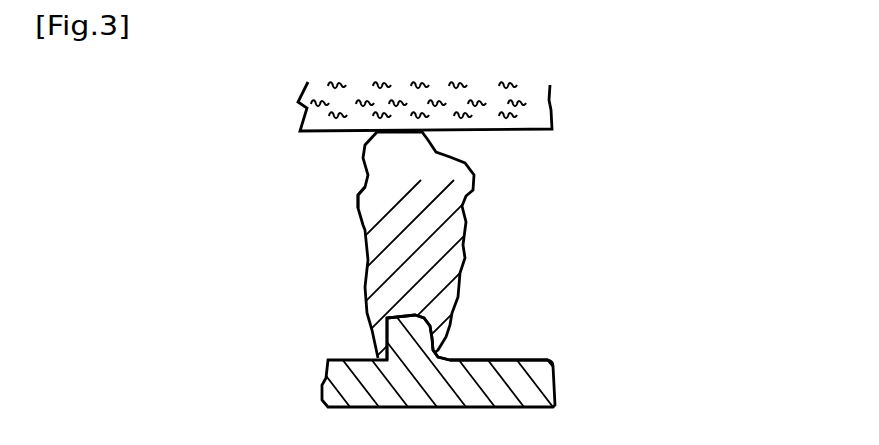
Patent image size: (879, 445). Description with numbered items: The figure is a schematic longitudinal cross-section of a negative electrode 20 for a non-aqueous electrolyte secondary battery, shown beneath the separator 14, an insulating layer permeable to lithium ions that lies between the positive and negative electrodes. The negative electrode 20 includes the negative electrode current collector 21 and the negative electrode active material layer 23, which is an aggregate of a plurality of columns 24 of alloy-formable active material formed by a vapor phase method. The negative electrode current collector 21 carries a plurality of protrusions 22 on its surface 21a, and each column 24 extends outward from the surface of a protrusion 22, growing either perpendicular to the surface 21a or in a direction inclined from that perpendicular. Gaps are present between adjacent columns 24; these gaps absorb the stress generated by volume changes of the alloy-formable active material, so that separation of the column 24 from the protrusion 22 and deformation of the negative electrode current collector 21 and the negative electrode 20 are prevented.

The separator 14 is at (510, 103).
The negative electrode 20 is at (597, 245).
The negative electrode current collector 21 is at (528, 385).
The surface 21a is at (527, 358).
The protrusion 22 is at (418, 292).
The negative electrode active material layer 23 is at (347, 278).
The column 24 is at (430, 208).